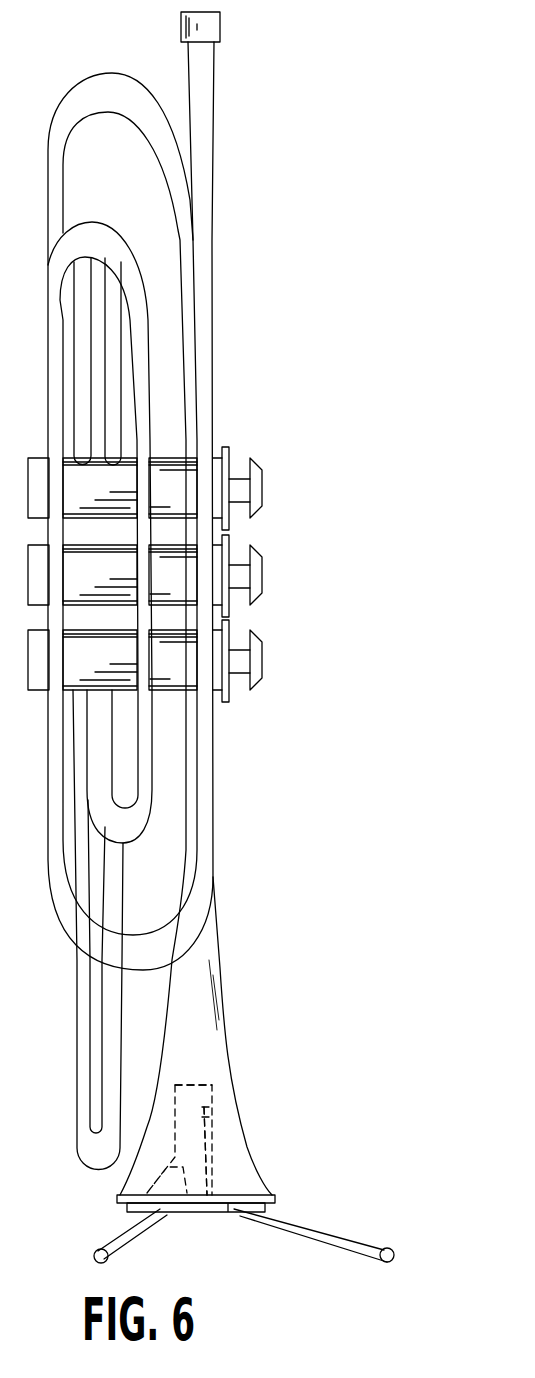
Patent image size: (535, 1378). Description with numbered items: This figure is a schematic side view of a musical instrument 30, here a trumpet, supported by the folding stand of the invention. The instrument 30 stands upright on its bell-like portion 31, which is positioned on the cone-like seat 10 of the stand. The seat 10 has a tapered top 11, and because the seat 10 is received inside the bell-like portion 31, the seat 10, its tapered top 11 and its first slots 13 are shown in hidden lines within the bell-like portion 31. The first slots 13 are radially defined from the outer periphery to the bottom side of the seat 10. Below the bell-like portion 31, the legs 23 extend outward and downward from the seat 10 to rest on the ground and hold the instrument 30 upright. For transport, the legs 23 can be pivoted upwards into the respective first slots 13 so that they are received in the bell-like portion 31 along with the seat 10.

The musical instrument 30 is at (322, 475).
The bell-like portion 31 is at (118, 1195).
The cone-like seat 10 is at (235, 1185).
The tapered top 11 is at (205, 1093).
The first slots 13 is at (213, 1122).
The legs 23 is at (317, 1232).